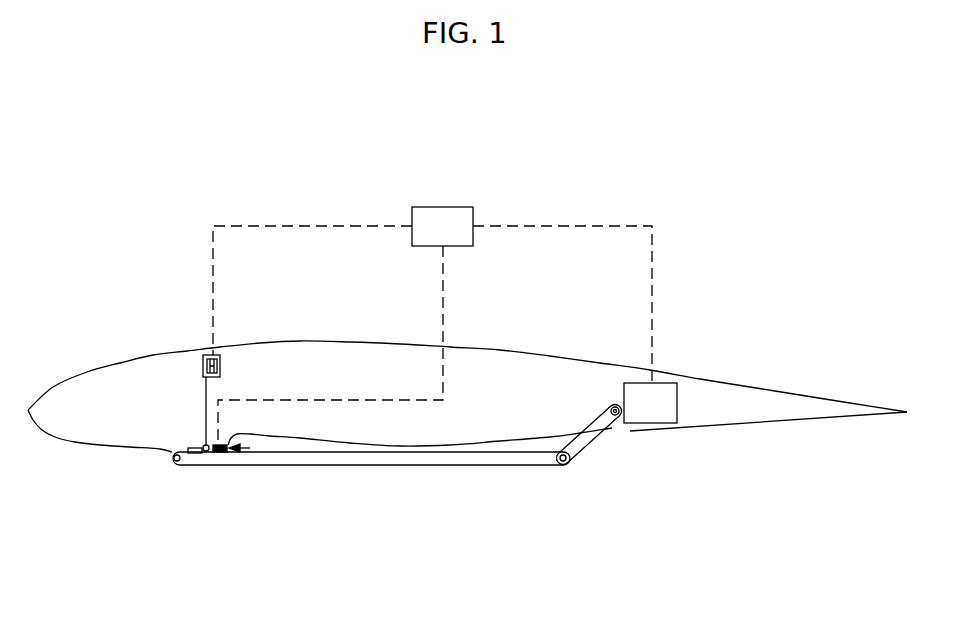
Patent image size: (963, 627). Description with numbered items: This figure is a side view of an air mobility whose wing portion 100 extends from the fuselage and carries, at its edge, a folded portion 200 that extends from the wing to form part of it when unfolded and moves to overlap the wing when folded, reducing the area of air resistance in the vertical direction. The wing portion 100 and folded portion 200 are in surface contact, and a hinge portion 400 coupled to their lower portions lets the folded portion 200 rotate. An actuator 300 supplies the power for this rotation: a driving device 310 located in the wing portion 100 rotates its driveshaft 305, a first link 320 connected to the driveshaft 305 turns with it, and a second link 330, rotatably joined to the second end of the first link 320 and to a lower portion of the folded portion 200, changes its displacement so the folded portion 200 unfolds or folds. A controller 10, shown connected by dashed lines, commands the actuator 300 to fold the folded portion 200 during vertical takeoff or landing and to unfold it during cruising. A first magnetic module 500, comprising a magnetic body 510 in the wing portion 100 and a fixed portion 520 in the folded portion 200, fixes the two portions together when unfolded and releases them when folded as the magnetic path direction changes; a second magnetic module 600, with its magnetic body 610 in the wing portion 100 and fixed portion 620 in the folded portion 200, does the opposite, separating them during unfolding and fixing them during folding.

The controller 10 is at (432, 326).
The wing portion 100 is at (530, 360).
The folded portion 200 is at (102, 383).
The actuator 300 is at (537, 480).
The driveshaft 305 is at (616, 418).
The driving device 310 is at (670, 390).
The first link 320 is at (585, 438).
The second link 330 is at (432, 458).
The hinge portion 400 is at (206, 452).
The first magnetic module 500 is at (223, 340).
The magnetic body 510 is at (221, 365).
The fixed portion 520 is at (202, 365).
The second magnetic module 600 is at (250, 448).
The magnetic body 610 is at (220, 453).
The fixed portion 620 is at (193, 446).